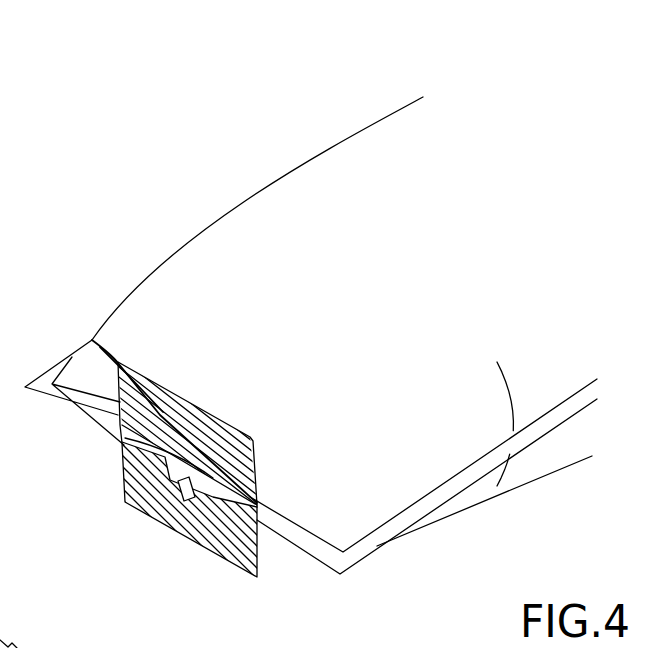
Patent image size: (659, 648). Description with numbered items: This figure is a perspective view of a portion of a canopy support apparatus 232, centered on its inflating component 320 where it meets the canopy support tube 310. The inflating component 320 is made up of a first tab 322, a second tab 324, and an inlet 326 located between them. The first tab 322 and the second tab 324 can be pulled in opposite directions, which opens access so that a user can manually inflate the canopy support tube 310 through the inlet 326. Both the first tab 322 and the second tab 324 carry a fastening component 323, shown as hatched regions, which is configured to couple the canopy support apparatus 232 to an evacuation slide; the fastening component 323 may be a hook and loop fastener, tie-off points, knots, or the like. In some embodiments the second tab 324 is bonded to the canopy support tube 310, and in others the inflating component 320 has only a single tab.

The canopy support apparatus 232 is at (170, 143).
The canopy support tube 310 is at (423, 251).
The inflating component 320 is at (85, 332).
The first tab 322 is at (130, 503).
The fastening component 323 is at (240, 471).
The second tab 324 is at (217, 434).
The inlet 326 is at (192, 474).